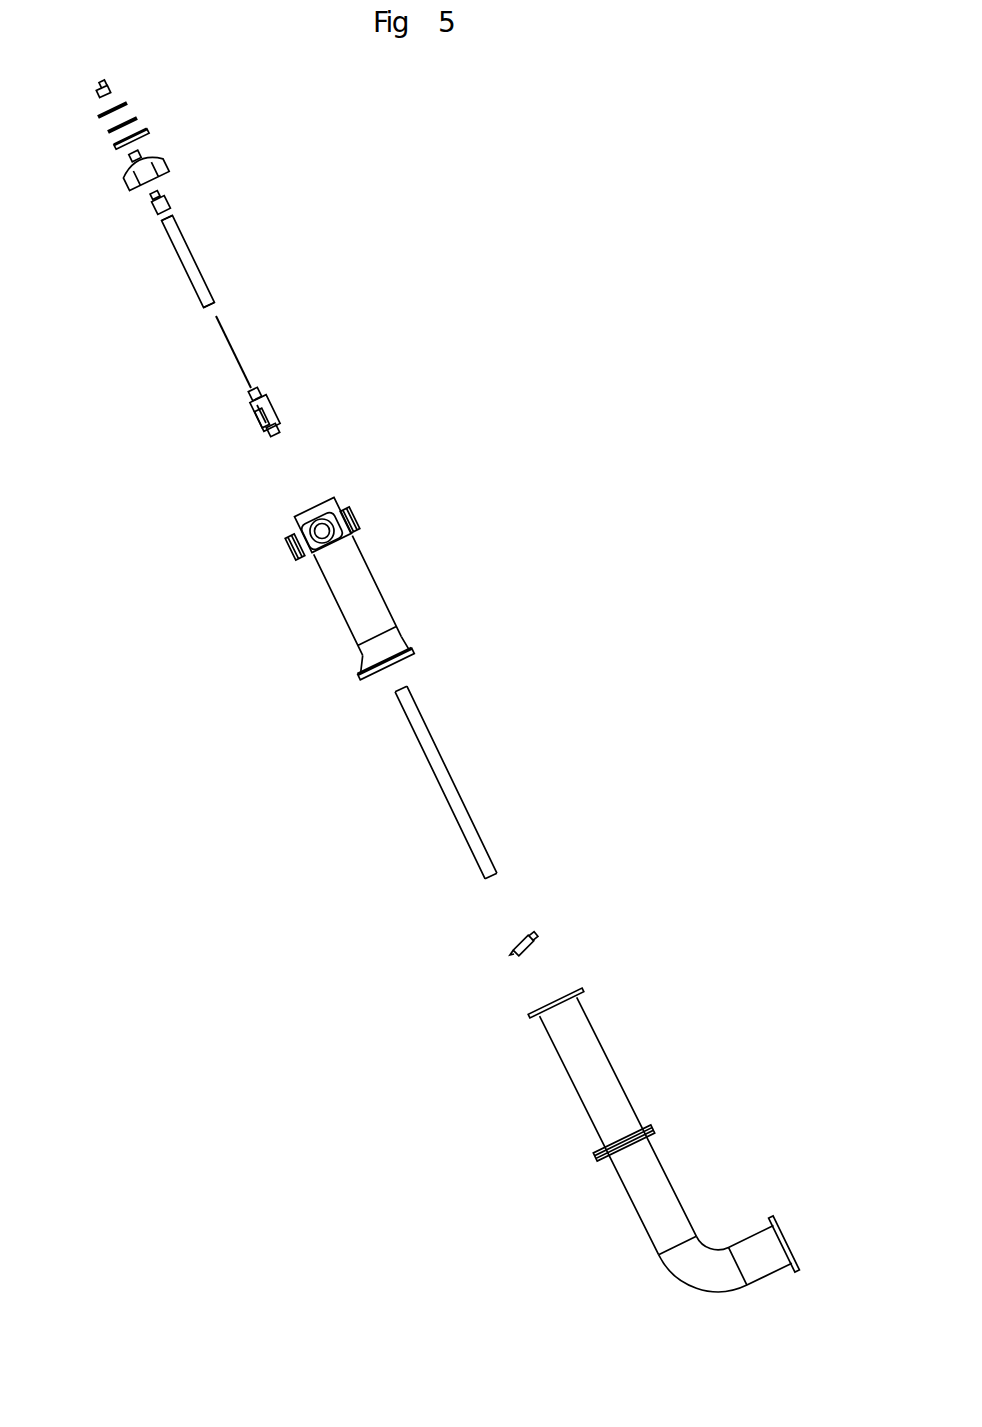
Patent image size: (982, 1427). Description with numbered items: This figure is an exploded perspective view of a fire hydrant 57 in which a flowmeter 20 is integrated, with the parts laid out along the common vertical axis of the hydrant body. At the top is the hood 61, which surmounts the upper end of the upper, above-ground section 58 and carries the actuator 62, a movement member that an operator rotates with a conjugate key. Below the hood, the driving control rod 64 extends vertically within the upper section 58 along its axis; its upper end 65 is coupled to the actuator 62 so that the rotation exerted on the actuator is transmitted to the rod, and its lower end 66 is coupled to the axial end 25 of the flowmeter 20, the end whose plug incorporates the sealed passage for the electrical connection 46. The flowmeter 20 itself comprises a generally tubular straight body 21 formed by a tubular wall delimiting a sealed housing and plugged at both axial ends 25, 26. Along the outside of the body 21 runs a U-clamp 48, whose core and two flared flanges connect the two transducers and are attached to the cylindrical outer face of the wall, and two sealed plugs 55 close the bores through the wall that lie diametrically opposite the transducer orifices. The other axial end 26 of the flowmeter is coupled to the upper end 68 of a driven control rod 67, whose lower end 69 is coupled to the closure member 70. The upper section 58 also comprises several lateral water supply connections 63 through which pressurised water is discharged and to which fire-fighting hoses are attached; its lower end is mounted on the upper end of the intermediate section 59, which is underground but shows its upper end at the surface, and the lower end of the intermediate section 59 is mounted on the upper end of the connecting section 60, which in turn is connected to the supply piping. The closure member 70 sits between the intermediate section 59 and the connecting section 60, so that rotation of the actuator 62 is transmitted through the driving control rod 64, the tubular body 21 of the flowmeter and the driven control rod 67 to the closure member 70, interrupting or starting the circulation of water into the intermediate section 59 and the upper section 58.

The actuator 62 is at (110, 90).
The hood 61 is at (160, 170).
The upper end of the driving control rod 65 is at (172, 215).
The driving control rod 64 is at (198, 267).
The lower end of the driving control rod 66 is at (212, 303).
The electrical connection 46 is at (217, 332).
The flowmeter 20 is at (268, 404).
The axial end of the body 25 is at (262, 398).
The tubular straight body 21 is at (275, 413).
The U-clamp 48 is at (255, 423).
The sealed plugs 55 is at (268, 407).
The other axial end of the flowmeter 26 is at (262, 440).
The lateral water supply connections 63 is at (322, 531).
The fire hydrant 57 is at (326, 576).
The upper, above-ground section 58 is at (344, 614).
The upper end of the driven control rod 68 is at (401, 688).
The driven control rod 67 is at (452, 777).
The lower end of the driven control rod 69 is at (495, 875).
The closure member 70 is at (538, 942).
The intermediate section 59 is at (600, 1070).
The connecting section 60 is at (662, 1203).